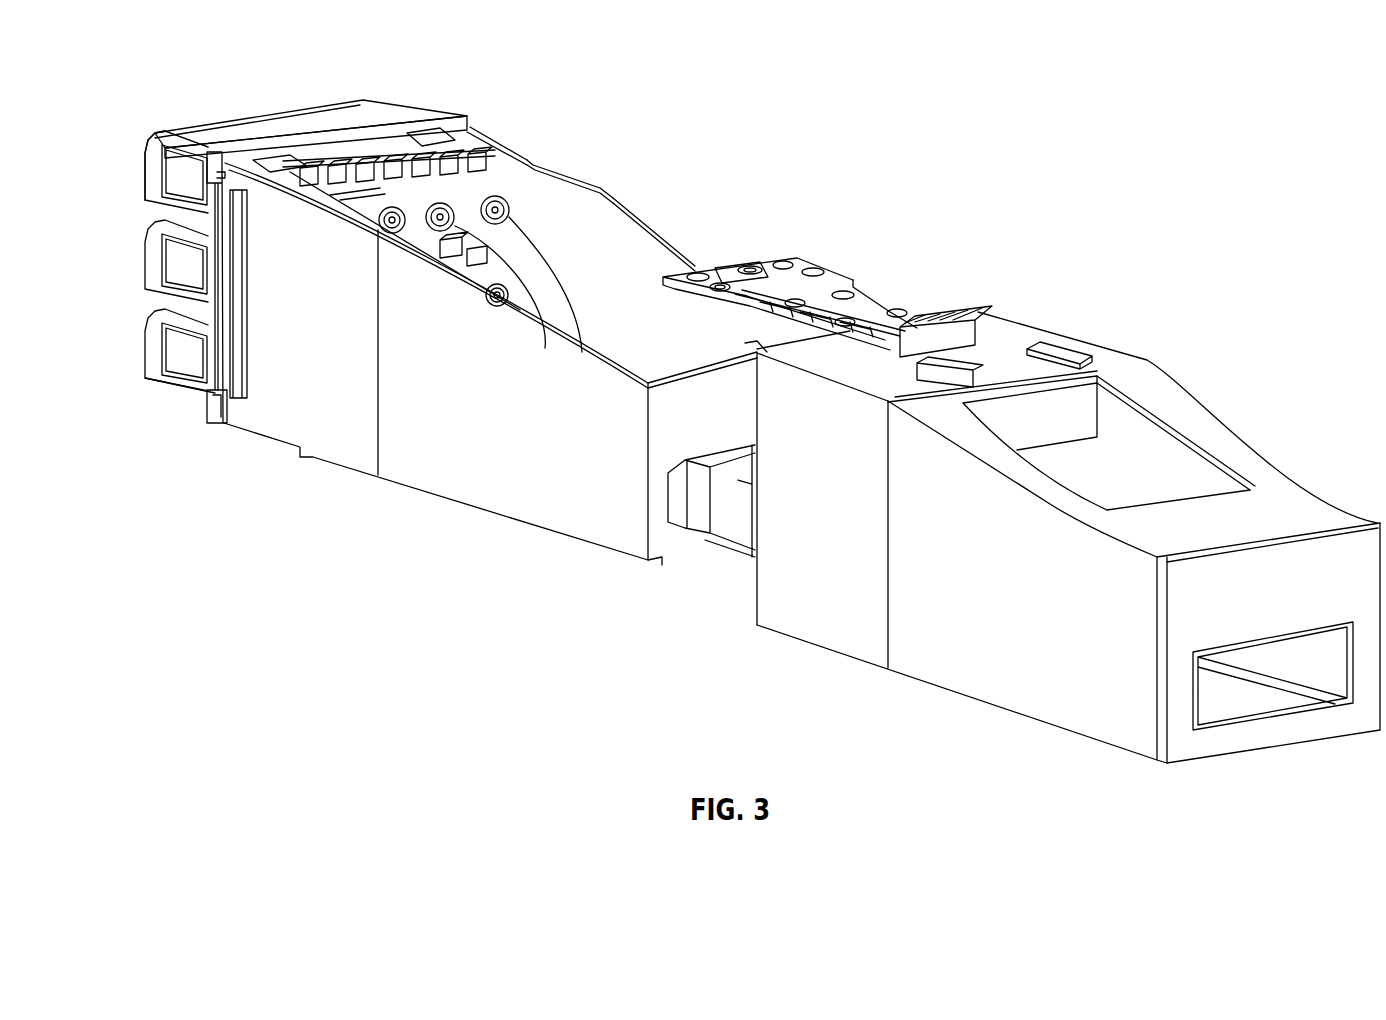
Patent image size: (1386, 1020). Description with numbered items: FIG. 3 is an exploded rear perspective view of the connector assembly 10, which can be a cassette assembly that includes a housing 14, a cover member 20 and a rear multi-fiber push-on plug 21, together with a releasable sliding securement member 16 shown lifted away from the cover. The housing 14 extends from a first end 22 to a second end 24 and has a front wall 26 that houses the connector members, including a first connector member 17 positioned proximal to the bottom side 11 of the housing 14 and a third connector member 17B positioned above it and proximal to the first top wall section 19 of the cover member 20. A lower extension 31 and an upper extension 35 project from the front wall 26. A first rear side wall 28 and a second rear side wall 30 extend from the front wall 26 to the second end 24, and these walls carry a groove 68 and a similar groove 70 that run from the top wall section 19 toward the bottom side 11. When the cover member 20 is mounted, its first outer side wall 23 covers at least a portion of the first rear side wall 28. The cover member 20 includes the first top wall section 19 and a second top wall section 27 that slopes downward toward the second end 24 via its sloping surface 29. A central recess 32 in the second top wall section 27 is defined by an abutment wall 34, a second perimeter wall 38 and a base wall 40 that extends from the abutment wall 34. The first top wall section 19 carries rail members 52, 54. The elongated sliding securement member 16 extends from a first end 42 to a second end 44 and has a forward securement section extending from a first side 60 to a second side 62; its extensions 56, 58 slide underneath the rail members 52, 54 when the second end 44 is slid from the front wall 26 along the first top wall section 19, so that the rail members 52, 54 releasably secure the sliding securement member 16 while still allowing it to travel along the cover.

The connector assembly 10 is at (752, 112).
The bottom side 11 is at (305, 463).
The housing 14 is at (477, 123).
The sliding securement member 16 is at (832, 278).
The first connector member 17 is at (183, 357).
The third connector member 17B is at (177, 163).
The first top wall section 19 is at (1015, 323).
The cover member 20 is at (1289, 466).
The rear multi-fiber push on plug 21 is at (737, 537).
The first end 22 is at (160, 404).
The first outer side wall 23 is at (1063, 683).
The second end 24 is at (729, 590).
The front wall 26 is at (460, 114).
The second top wall section 27 is at (1328, 517).
The first rear side wall 28 is at (490, 483).
The sloping surface 29 is at (1222, 533).
The second rear side wall 30 is at (640, 205).
The lower extension 31 is at (220, 427).
The recess 32 is at (1133, 458).
The abutment wall 34 is at (1080, 417).
The upper extension 35 is at (213, 157).
The second perimeter wall 38 is at (1120, 433).
The base wall 40 is at (1131, 496).
The first end 42 is at (778, 246).
The second end 44 is at (969, 306).
The rail member 52 is at (886, 402).
The rail member 54 is at (1052, 358).
The extension 56 is at (817, 336).
The extension 58 is at (899, 292).
The first side 60 is at (686, 314).
The second side 62 is at (819, 255).
The groove 68 is at (212, 266).
The groove 70 is at (549, 148).